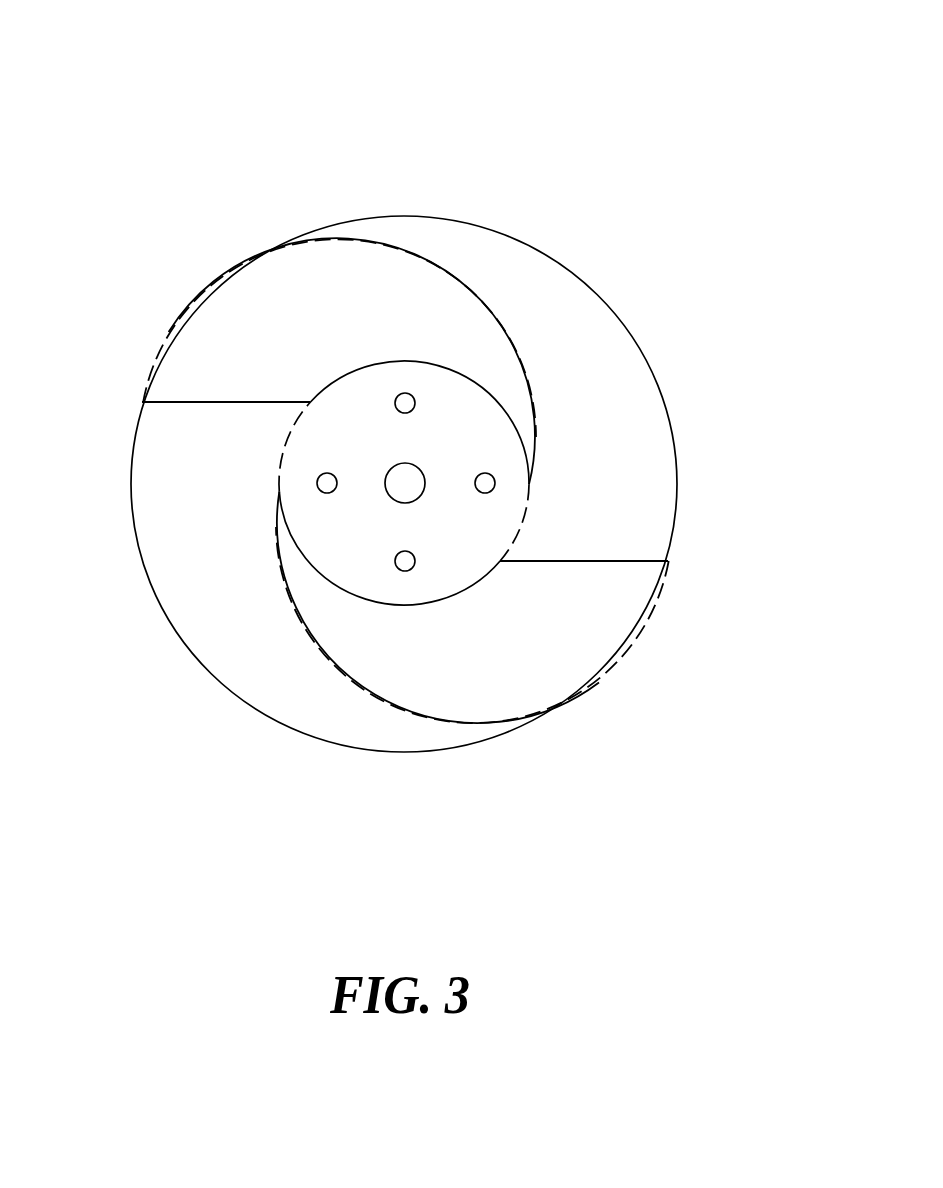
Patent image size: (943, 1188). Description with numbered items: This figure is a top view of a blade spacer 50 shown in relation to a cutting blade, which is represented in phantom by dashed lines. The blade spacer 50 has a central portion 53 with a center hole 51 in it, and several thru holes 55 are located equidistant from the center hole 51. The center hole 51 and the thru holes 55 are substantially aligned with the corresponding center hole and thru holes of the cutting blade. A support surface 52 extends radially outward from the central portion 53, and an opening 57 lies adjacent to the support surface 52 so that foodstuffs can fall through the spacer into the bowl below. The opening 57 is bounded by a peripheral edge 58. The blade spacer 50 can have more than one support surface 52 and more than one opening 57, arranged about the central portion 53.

The blade spacer 50 is at (834, 56).
The center hole 51 is at (405, 463).
The support surface 52 is at (605, 445).
The central portion 53 is at (404, 483).
The thru holes 55 is at (413, 393).
The opening 57 is at (248, 342).
The peripheral edge 58 is at (414, 711).